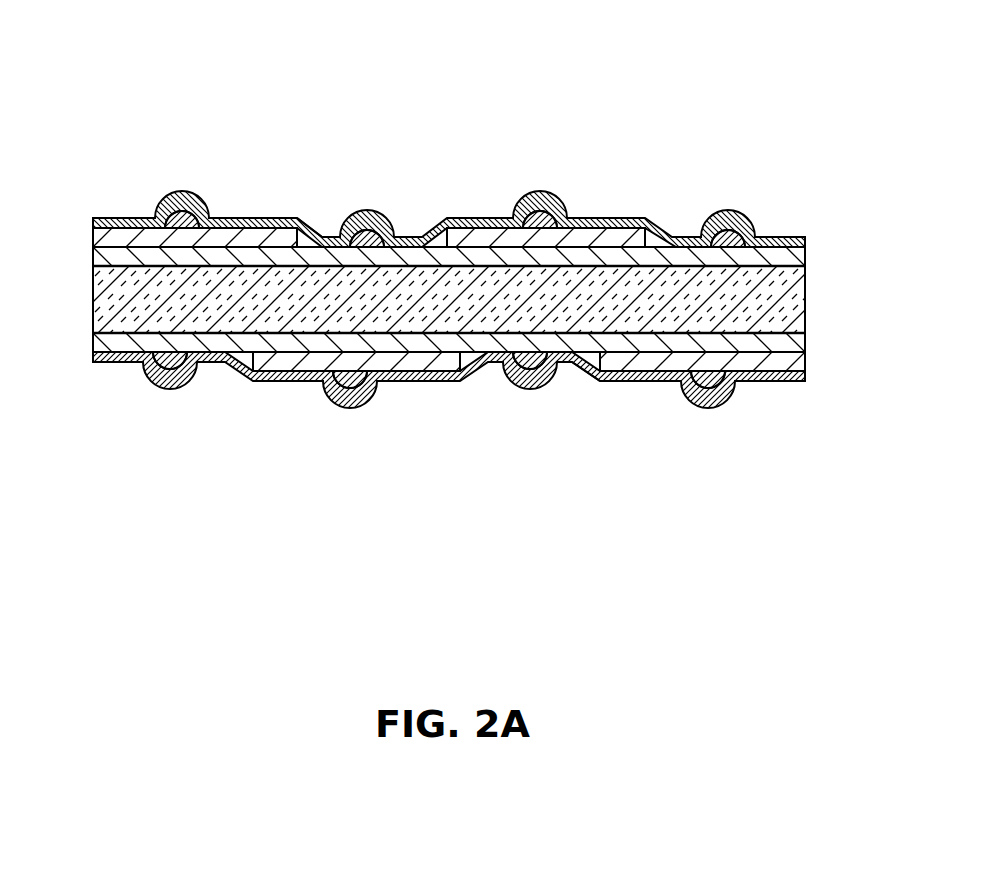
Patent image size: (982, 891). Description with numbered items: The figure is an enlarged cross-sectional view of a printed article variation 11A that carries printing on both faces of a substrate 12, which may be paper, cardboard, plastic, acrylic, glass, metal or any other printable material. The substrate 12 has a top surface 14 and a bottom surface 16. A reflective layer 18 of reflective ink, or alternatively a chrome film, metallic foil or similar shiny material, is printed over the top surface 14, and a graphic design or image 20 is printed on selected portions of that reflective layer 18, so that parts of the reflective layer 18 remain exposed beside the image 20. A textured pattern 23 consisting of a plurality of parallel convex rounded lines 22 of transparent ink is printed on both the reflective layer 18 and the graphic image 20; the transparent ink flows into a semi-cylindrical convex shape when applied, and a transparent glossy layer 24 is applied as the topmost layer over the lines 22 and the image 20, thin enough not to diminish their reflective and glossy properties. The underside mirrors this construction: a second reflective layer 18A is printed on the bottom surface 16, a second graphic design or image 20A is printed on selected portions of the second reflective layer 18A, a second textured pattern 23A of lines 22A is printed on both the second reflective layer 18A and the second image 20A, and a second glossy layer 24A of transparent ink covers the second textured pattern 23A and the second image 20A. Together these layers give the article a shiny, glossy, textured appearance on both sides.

The printed article variation 11A is at (451, 283).
The substrate 12 is at (805, 305).
The top surface 14 is at (93, 268).
The bottom surface 16 is at (93, 333).
The reflective layer 18 is at (805, 260).
The second reflective layer 18A is at (93, 343).
The graphic design or image 20 is at (93, 237).
The second graphic design or image 20A is at (805, 363).
The lines 22 is at (180, 222).
The second lines 22A is at (176, 385).
The textured pattern 23 is at (521, 168).
The second textured pattern 23A is at (420, 455).
The transparent glossy layer 24 is at (313, 233).
The second glossy layer 24A is at (585, 375).